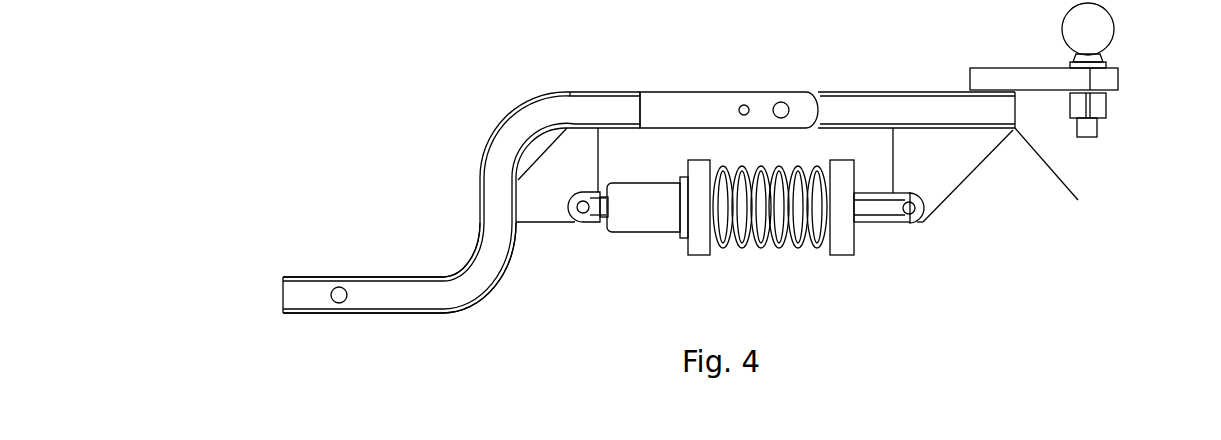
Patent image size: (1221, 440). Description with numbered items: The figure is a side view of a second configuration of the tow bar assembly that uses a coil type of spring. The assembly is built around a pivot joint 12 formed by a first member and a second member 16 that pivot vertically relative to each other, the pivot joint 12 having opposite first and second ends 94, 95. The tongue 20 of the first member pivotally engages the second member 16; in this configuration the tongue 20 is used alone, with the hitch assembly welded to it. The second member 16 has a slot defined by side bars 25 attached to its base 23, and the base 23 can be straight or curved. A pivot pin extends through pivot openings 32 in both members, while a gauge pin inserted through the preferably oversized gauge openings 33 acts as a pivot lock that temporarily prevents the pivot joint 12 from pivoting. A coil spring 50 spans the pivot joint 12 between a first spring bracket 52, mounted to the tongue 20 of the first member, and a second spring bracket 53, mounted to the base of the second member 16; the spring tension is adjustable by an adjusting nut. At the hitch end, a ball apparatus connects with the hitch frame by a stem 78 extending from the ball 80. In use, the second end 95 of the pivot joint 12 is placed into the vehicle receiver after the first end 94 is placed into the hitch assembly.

The pivot joint 12 is at (955, 110).
The second member 16 is at (485, 143).
The tongue 20 is at (863, 113).
The base 23 is at (465, 265).
The side bars 25 is at (682, 108).
The pivot openings 32 is at (783, 106).
The gauge openings 33 is at (737, 105).
The coil spring 50 is at (740, 230).
The first spring bracket 52 is at (547, 188).
The second spring bracket 53 is at (950, 160).
The stem 78 is at (1093, 128).
The ball 80 is at (1095, 33).
The first end 94 is at (1017, 125).
The second end 95 is at (283, 299).